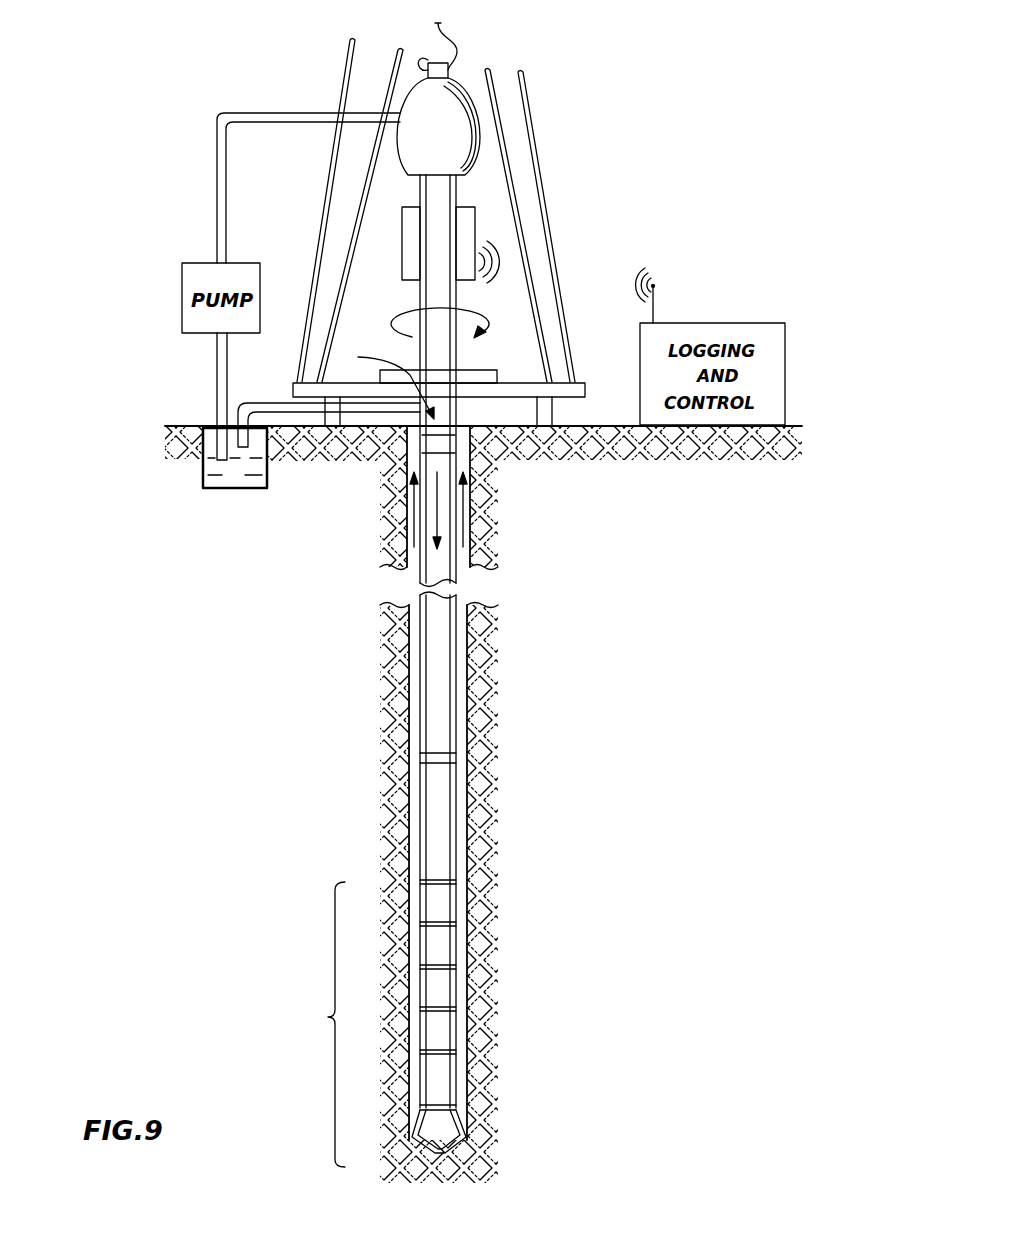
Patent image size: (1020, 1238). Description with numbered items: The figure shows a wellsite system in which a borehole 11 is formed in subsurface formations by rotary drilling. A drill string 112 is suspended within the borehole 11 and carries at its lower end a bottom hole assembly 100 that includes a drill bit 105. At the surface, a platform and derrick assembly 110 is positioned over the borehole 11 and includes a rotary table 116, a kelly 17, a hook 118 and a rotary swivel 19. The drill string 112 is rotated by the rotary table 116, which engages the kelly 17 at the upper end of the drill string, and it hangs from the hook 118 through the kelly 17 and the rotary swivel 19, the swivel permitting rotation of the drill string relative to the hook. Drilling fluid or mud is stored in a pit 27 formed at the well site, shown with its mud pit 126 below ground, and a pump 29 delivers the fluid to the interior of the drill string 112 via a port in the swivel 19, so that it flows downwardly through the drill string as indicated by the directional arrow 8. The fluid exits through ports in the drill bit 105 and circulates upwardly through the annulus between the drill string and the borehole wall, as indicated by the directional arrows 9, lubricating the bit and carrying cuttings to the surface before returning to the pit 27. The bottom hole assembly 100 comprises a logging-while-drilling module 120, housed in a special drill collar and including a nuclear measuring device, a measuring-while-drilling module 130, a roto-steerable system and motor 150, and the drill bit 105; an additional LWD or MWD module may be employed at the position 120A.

The directional arrow 8 is at (432, 507).
The directional arrows 9 is at (412, 505).
The borehole 11 is at (466, 426).
The kelly 17 is at (432, 355).
The rotary swivel 19 is at (428, 160).
The pit 27 is at (208, 420).
The pump 29 is at (196, 336).
The bottom hole assembly 100 is at (327, 1017).
The drill bit 105 is at (440, 1125).
The platform and derrick assembly 110 is at (560, 114).
The drill string 112 is at (377, 383).
The rotary table 116 is at (480, 368).
The hook 118 is at (436, 27).
The logging-while-drilling (LWD) module 120 is at (445, 943).
The LWD and/or MWD module 120A is at (445, 1032).
The mud pit 126 is at (238, 484).
The measuring-while-drilling (MWD) module 130 is at (445, 987).
The roto-steerable system and motor 150 is at (445, 1073).